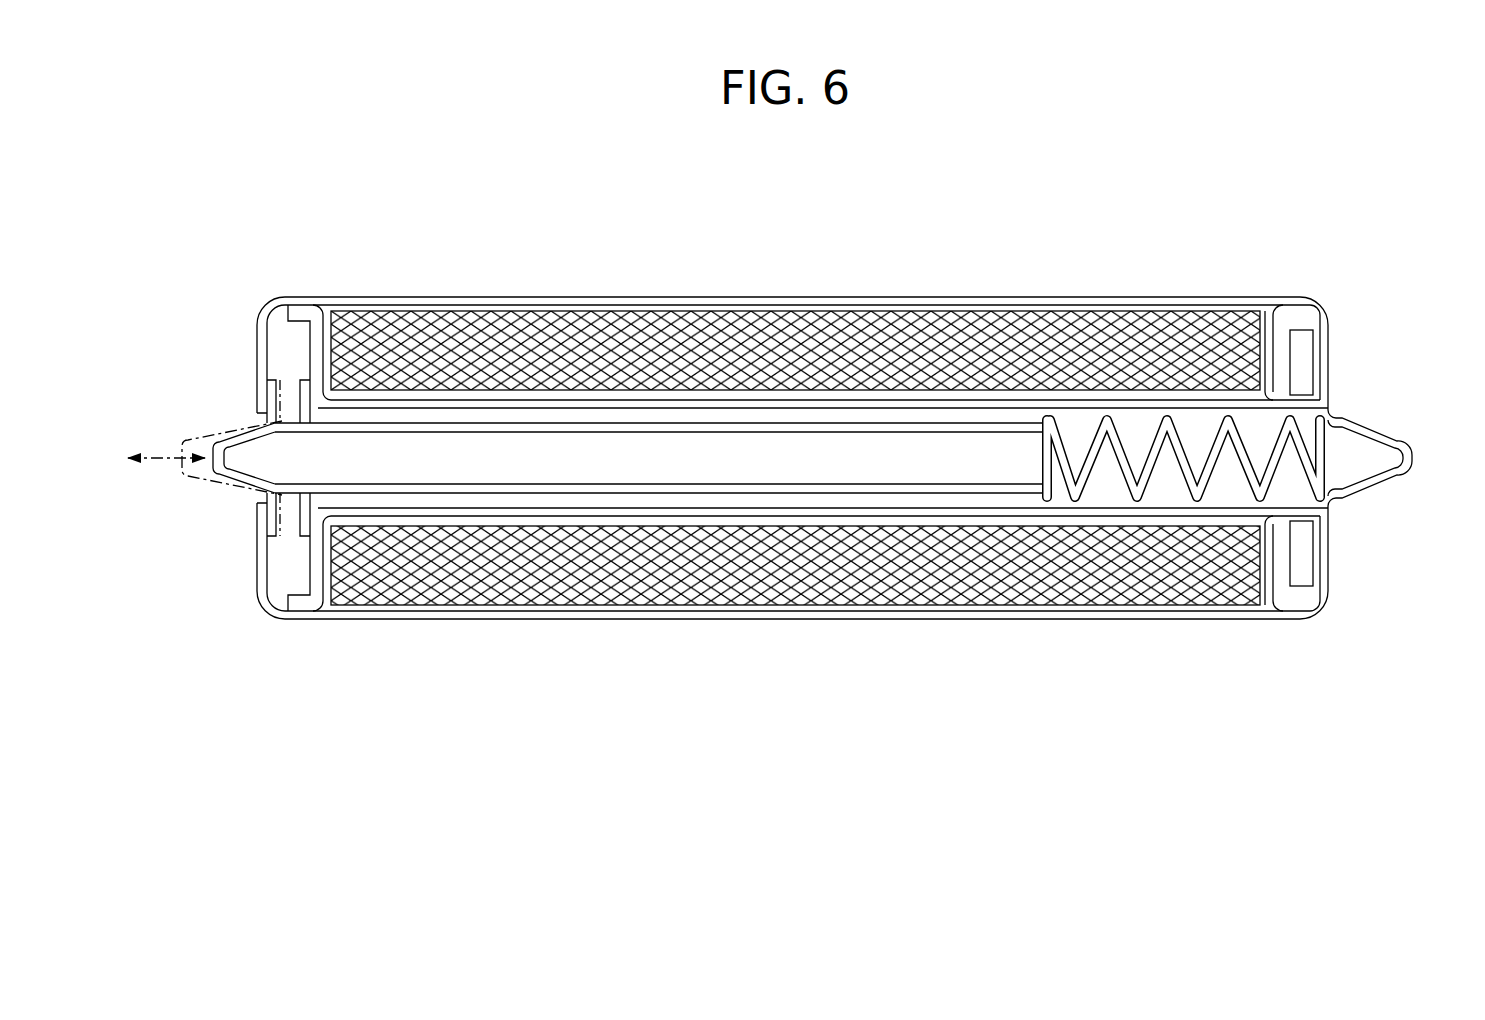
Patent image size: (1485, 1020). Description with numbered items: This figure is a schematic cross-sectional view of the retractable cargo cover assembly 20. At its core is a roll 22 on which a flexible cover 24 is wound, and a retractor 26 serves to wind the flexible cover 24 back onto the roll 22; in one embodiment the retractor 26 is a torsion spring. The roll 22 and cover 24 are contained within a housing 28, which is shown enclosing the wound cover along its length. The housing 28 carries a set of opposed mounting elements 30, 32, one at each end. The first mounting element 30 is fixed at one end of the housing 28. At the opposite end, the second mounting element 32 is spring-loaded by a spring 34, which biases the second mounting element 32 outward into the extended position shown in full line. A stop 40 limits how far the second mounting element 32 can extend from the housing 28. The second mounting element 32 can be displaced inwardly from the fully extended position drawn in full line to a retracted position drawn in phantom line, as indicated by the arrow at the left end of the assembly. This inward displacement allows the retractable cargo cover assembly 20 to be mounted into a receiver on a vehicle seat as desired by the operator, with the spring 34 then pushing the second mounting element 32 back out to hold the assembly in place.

The retractable cargo cover assembly 20 is at (1205, 232).
The roll 22 is at (413, 395).
The flexible cover 24 is at (975, 345).
The retractor 26 is at (1305, 360).
The housing 28 is at (727, 300).
The first mounting element 30 is at (1375, 488).
The second mounting element 32 is at (230, 478).
The spring 34 is at (1122, 470).
The stop 40 is at (303, 528).